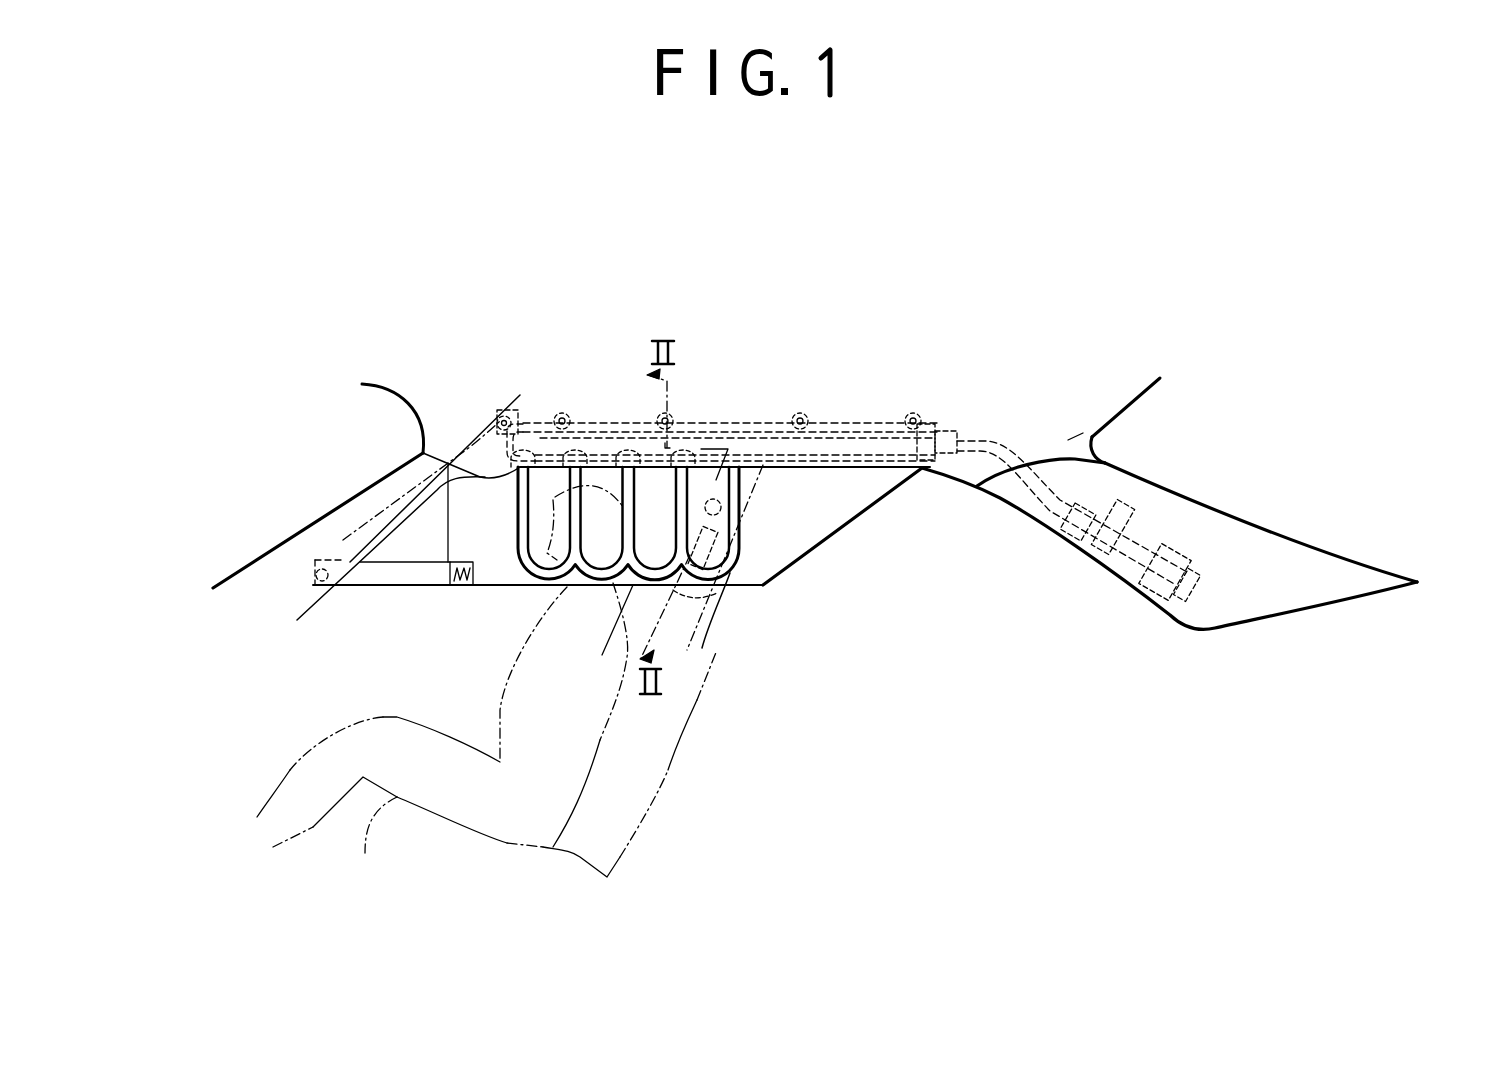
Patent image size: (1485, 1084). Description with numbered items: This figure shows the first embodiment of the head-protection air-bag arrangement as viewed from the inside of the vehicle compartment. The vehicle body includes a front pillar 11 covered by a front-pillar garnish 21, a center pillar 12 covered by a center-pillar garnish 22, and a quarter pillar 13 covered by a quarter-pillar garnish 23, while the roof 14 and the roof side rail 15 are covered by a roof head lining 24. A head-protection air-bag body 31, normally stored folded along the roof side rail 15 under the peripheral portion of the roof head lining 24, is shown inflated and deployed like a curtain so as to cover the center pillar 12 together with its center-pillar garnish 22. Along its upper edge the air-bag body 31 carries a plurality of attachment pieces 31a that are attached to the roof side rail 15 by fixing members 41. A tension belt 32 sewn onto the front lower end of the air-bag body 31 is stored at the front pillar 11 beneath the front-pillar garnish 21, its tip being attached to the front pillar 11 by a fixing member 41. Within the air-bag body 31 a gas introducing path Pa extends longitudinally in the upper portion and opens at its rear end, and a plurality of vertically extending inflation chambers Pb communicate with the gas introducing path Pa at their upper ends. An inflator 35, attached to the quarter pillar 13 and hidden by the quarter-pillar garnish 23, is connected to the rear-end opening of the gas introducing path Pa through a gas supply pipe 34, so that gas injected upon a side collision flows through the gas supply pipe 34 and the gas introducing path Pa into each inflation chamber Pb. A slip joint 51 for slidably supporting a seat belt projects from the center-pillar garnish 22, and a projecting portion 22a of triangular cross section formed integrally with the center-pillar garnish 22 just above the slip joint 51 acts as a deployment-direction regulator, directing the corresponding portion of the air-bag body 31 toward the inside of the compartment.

The front pillar 11 is at (357, 500).
The center pillar 12 is at (720, 610).
The quarter pillar 13 is at (1230, 515).
The roof 14 is at (1140, 393).
The roof side rail 15 is at (950, 468).
The front-pillar garnish 21 is at (388, 493).
The center-pillar garnish 22 is at (693, 637).
The projecting portion 22a is at (713, 503).
The quarter-pillar garnish 23 is at (1280, 553).
The roof head lining 24 is at (1093, 437).
The head-protection air-bag body 31 is at (883, 470).
The attachment pieces 31a is at (520, 400).
The tension belt 32 is at (347, 550).
The gas supply pipe 34 is at (990, 443).
The inflator 35 is at (1128, 560).
The fixing member 41 is at (500, 418).
The slip joint 51 is at (697, 570).
The gas introducing path Pa is at (765, 450).
The inflation chambers Pb is at (540, 513).